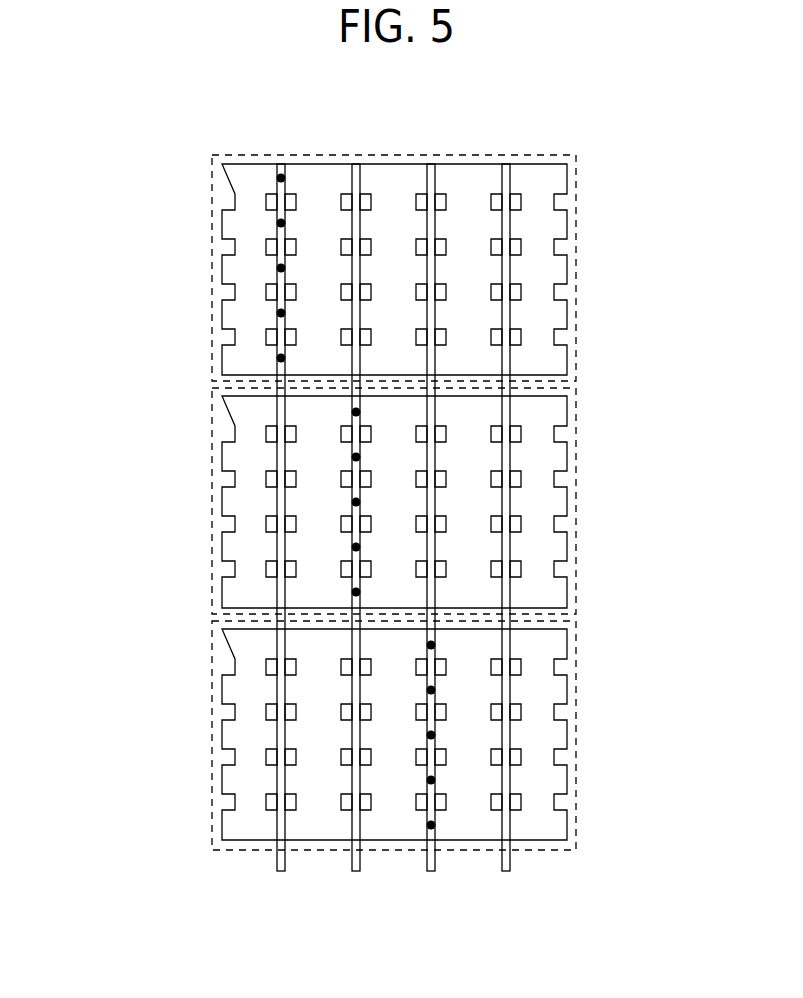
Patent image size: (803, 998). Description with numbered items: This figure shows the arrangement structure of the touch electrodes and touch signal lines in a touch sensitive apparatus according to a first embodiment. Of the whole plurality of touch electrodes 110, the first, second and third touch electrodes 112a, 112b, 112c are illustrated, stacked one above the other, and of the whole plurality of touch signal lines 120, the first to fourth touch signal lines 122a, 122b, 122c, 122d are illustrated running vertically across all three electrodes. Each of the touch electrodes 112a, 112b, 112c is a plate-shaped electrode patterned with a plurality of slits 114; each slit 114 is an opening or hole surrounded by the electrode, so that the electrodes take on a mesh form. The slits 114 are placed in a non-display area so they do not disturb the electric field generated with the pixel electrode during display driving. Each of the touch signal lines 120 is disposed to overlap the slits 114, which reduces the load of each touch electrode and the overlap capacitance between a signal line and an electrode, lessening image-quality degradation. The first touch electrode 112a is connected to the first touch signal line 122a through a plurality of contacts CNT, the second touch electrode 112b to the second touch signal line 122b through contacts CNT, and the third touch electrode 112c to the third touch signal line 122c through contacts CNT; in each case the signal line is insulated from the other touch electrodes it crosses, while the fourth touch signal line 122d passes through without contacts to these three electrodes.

The touch electrodes 110 is at (304, 502).
The first touch electrode 112a is at (212, 279).
The second touch electrode 112b is at (212, 493).
The third touch electrode 112c is at (338, 735).
The slit 114 is at (270, 249).
The touch signal lines 120 is at (394, 576).
The first touch signal line 122a is at (281, 871).
The second touch signal line 122b is at (356, 871).
The third touch signal line 122c is at (431, 871).
The fourth touch signal line 122d is at (508, 551).
The contact CNT is at (281, 224).